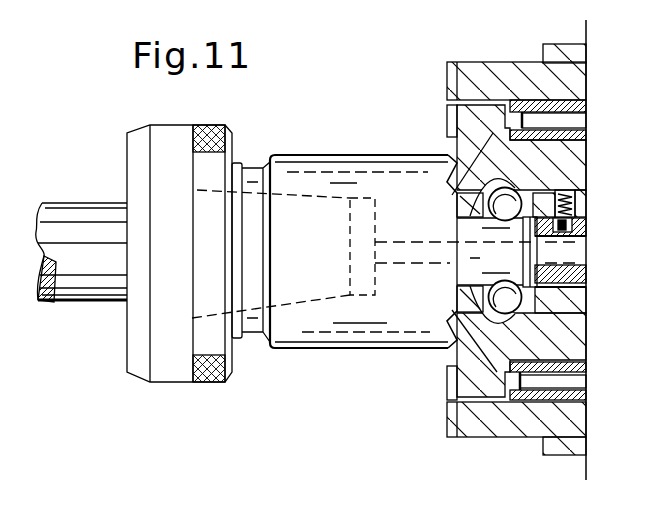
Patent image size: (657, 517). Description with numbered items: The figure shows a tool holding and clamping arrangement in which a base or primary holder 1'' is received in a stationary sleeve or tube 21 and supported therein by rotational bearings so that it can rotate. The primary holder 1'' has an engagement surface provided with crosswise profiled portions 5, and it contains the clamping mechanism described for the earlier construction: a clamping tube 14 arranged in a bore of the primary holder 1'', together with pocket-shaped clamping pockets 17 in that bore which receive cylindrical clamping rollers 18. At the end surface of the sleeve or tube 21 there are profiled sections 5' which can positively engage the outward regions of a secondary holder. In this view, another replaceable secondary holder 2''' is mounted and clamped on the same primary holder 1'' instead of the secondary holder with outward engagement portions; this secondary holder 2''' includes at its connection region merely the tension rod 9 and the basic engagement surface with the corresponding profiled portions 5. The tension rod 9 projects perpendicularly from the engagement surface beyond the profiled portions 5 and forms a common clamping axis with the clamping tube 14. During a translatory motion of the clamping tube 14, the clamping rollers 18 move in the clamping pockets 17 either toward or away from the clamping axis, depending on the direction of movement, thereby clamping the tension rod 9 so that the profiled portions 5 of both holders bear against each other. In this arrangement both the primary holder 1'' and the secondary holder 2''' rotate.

The primary holder 1'' is at (516, 110).
The profiled sections 5' is at (413, 229).
The profiled portions 5 is at (412, 262).
The clamping tube 14 is at (533, 197).
The replaceable secondary holder 2''' is at (287, 268).
The tension rod 9 is at (467, 252).
The clamping rollers 18 is at (512, 306).
The stationary sleeve or tube 21 is at (475, 422).
The clamping pockets 17 is at (492, 333).